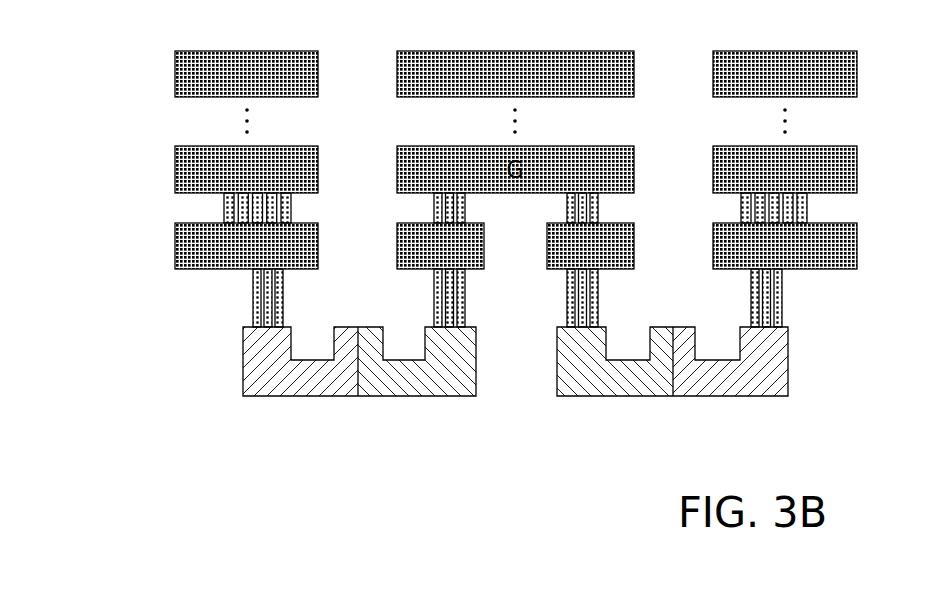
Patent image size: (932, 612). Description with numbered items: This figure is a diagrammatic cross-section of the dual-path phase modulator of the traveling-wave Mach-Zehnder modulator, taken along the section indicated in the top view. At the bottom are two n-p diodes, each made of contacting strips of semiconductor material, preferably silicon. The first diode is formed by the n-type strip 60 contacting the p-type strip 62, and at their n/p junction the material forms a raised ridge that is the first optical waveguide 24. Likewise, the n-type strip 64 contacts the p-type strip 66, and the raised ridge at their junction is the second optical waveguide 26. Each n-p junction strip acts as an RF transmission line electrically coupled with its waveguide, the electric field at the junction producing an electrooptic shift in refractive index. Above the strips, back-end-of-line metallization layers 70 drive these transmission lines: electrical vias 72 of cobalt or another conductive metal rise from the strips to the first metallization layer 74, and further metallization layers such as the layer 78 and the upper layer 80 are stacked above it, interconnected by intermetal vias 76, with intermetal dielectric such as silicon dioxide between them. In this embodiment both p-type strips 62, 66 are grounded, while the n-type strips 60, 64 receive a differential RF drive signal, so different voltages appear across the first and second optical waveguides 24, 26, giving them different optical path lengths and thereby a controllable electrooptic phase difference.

The metallization layers 70 is at (170, 50).
The electrical vias 72 is at (776, 296).
The first metallization layer 74 is at (846, 243).
The intermetal vias 76 is at (800, 204).
The additional metallization layer 78 is at (846, 166).
The upper metallization layer 80 is at (846, 71).
The first optical waveguide 24 is at (359, 298).
The second optical waveguide 26 is at (673, 298).
The n-type semiconductor strip 60 is at (297, 397).
The p-type semiconductor strip 62 is at (412, 397).
The n-type semiconductor strip 64 is at (728, 397).
The p-type semiconductor strip 66 is at (612, 397).